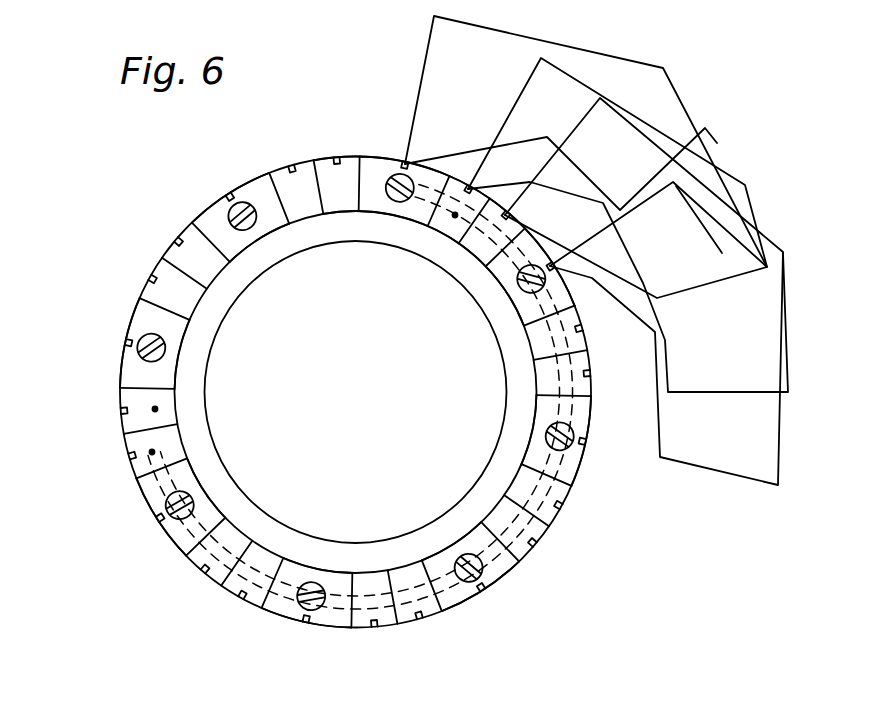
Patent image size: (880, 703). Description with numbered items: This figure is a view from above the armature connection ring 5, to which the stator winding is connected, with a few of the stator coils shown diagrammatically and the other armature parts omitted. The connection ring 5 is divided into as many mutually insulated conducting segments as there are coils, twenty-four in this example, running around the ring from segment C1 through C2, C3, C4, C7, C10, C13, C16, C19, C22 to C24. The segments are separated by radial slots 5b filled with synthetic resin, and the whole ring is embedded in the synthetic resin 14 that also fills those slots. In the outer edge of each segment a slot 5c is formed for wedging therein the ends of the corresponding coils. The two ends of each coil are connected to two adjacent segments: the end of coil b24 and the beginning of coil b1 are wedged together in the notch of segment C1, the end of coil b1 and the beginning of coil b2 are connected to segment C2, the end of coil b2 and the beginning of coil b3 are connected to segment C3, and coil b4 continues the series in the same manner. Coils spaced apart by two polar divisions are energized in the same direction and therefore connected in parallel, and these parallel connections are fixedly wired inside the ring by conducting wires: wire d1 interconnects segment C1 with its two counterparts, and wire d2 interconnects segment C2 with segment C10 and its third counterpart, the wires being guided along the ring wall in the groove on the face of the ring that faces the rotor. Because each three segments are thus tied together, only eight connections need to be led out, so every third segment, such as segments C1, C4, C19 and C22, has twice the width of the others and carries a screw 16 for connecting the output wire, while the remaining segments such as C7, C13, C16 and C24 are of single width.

The connection ring 5 is at (183, 220).
The radial slot 5b is at (291, 162).
The slot 5c is at (335, 155).
The synthetic resin 14 is at (290, 526).
The screw 16 is at (233, 204).
The segment C1 is at (398, 215).
The segment C2 is at (448, 222).
The segment C3 is at (503, 216).
The segment C4 is at (520, 302).
The segment C7 is at (535, 438).
The segment C10 is at (490, 562).
The segment C13 is at (330, 615).
The segment C16 is at (157, 493).
The segment C19 is at (150, 322).
The segment C22 is at (235, 243).
The segment C24 is at (336, 197).
The wire d1 is at (552, 462).
The wire d2 is at (563, 492).
The coil b1 is at (425, 68).
The coil b2 is at (728, 172).
The coil b3 is at (786, 270).
The coil b4 is at (686, 202).
The coil b24 is at (458, 132).